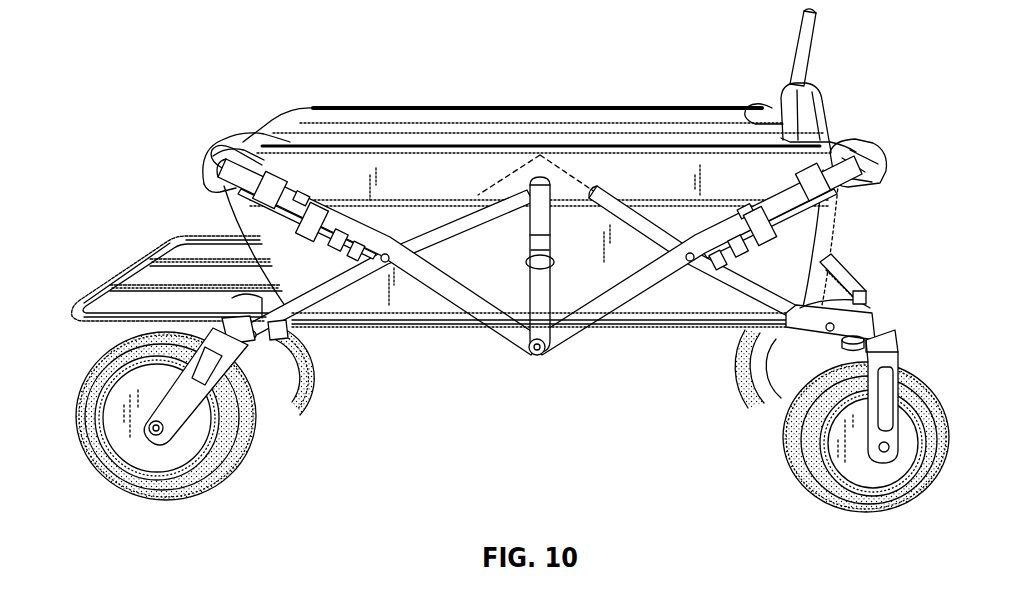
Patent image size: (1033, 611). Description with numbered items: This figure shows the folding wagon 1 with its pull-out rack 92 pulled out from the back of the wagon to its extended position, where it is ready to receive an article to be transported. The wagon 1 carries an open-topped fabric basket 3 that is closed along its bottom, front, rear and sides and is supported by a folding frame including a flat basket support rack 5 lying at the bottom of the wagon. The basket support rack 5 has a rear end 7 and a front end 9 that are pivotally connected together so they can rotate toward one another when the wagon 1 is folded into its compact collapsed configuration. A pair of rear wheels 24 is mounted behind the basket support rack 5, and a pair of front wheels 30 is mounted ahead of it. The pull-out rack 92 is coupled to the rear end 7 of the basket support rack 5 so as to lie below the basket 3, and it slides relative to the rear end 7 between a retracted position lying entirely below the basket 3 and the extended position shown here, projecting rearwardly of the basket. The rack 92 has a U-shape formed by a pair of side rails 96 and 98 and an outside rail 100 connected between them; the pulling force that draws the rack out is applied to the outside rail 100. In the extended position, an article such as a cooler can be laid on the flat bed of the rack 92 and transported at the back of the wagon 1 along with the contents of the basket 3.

The folding wagon 1 is at (885, 115).
The fabric basket 3 is at (527, 105).
The basket support rack 5 is at (429, 336).
The rear end of basket support rack 7 is at (387, 328).
The front end of basket support rack 9 is at (647, 322).
The rear wheel 24 is at (274, 383).
The front wheel 30 is at (751, 381).
The pull-out rack 92 is at (77, 297).
The side rail 96 is at (104, 322).
The side rail 98 is at (207, 236).
The outside rail 100 is at (150, 261).